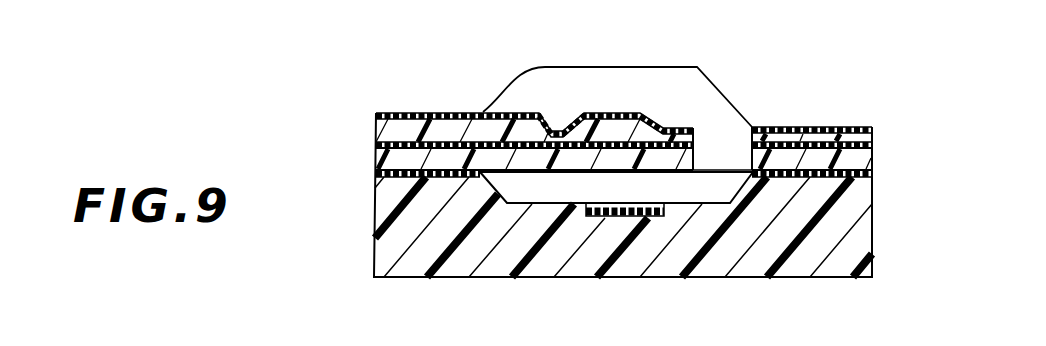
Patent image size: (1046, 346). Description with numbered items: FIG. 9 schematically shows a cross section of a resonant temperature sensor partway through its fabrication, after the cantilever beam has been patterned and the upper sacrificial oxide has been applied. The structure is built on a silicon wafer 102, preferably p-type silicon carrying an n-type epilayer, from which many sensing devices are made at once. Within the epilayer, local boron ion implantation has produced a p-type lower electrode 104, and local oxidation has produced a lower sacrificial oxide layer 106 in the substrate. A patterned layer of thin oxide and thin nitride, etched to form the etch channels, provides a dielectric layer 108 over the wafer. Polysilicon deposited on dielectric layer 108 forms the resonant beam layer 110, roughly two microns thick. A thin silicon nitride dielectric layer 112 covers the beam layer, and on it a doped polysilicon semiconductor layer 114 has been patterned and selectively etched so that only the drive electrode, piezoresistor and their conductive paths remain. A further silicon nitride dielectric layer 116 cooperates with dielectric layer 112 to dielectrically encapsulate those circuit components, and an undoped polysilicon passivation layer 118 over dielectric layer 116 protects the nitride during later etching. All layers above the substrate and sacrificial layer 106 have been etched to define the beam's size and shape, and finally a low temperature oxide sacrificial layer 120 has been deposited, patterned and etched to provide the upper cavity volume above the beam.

The silicon wafer 102 is at (825, 258).
The lower electrode 104 is at (627, 203).
The lower sacrificial oxide layer 106 is at (563, 199).
The dielectric layer 108 is at (374, 178).
The resonant beam layer 110 is at (855, 158).
The dielectric layer 112 is at (376, 146).
The semiconductor layer 114 is at (446, 134).
The dielectric layer 116 is at (785, 138).
The passivation layer 118 is at (525, 112).
The sacrificial layer 120 is at (633, 80).